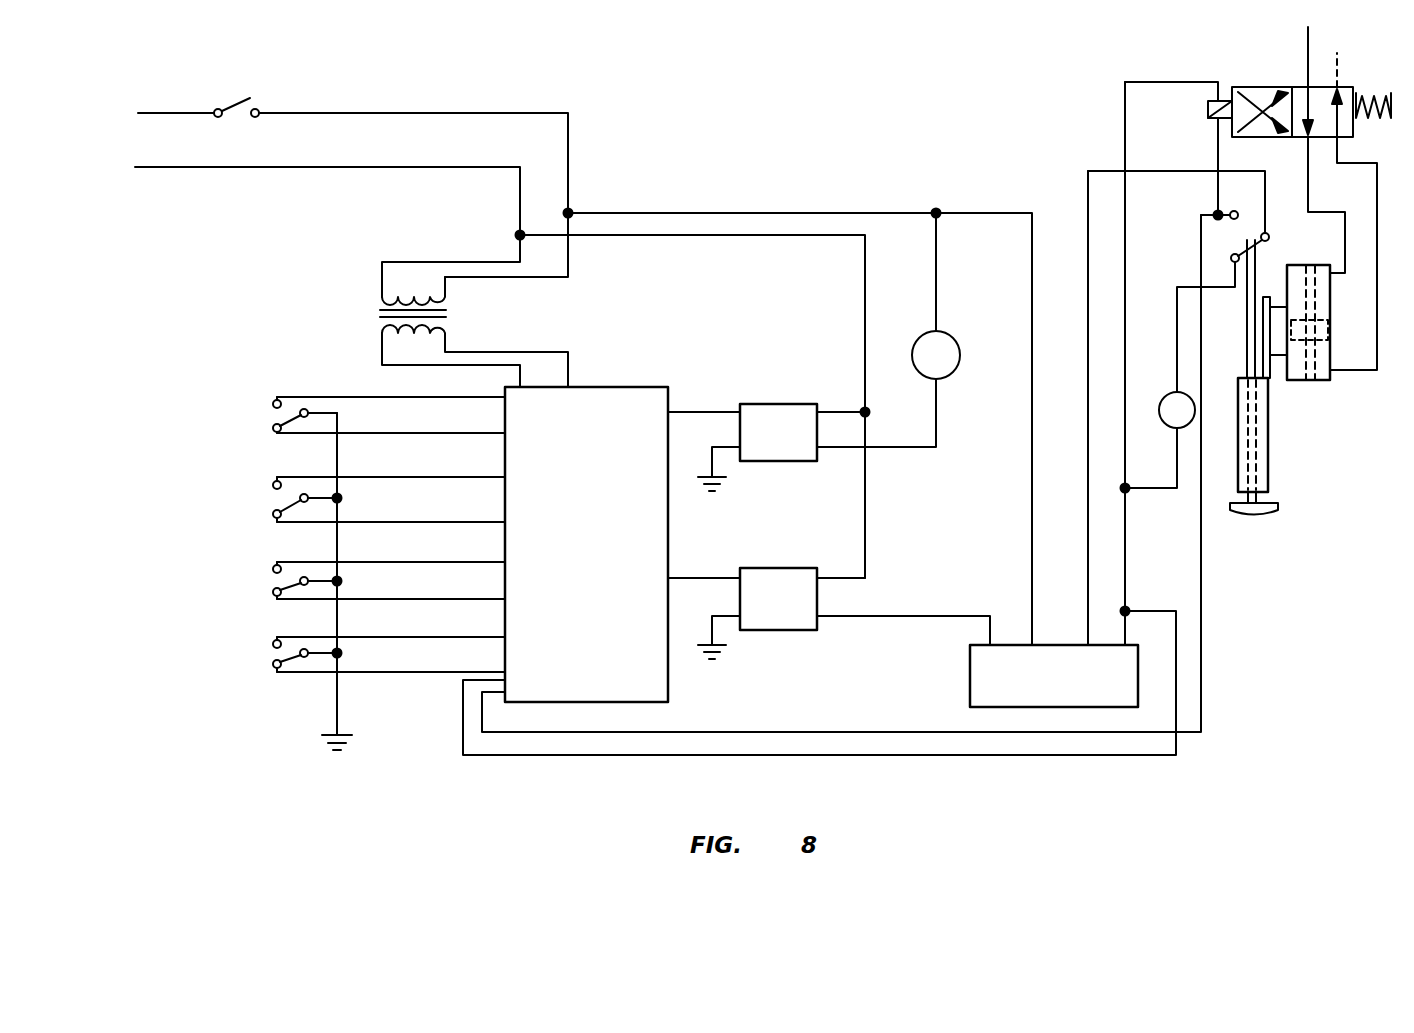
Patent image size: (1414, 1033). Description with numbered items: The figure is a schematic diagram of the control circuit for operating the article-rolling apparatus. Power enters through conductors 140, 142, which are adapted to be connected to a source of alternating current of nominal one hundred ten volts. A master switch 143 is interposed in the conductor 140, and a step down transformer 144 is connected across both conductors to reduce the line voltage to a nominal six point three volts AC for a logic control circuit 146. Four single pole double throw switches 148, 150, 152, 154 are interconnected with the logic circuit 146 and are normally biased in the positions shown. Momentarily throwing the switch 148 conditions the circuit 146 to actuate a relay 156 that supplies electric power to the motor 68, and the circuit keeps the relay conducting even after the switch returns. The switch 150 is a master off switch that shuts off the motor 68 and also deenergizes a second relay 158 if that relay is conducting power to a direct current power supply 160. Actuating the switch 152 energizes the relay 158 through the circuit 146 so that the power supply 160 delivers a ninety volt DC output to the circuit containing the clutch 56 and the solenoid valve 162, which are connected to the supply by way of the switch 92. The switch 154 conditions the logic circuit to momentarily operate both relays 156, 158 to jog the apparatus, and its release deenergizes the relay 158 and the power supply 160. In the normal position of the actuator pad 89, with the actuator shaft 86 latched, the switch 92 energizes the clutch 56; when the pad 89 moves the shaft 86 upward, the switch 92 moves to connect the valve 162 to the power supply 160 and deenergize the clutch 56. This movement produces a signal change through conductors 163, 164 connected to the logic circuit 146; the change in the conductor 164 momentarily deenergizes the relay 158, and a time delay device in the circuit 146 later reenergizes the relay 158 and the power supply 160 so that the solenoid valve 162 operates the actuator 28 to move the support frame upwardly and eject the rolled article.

The conductor 140 is at (320, 113).
The conductor 142 is at (324, 167).
The master switch 143 is at (235, 107).
The step down transformer 144 is at (372, 314).
The logic control circuit 146 is at (635, 386).
The single pole double throw switch 148 is at (273, 405).
The master off switch 150 is at (274, 507).
The single pole double throw switch 152 is at (274, 585).
The single pole double throw switch 154 is at (274, 658).
The relay 156 is at (764, 404).
The second relay 158 is at (803, 567).
The direct current power supply 160 is at (990, 675).
The solenoid valve 162 is at (1258, 87).
The conductor 163 is at (1202, 700).
The conductor 164 is at (1105, 756).
The motor 68 is at (950, 336).
The switch 92 is at (1264, 232).
The clutch 56 is at (1168, 390).
The actuator shaft 86 is at (1246, 330).
The actuator 28 is at (1338, 294).
The actuator pad 89 is at (1270, 512).